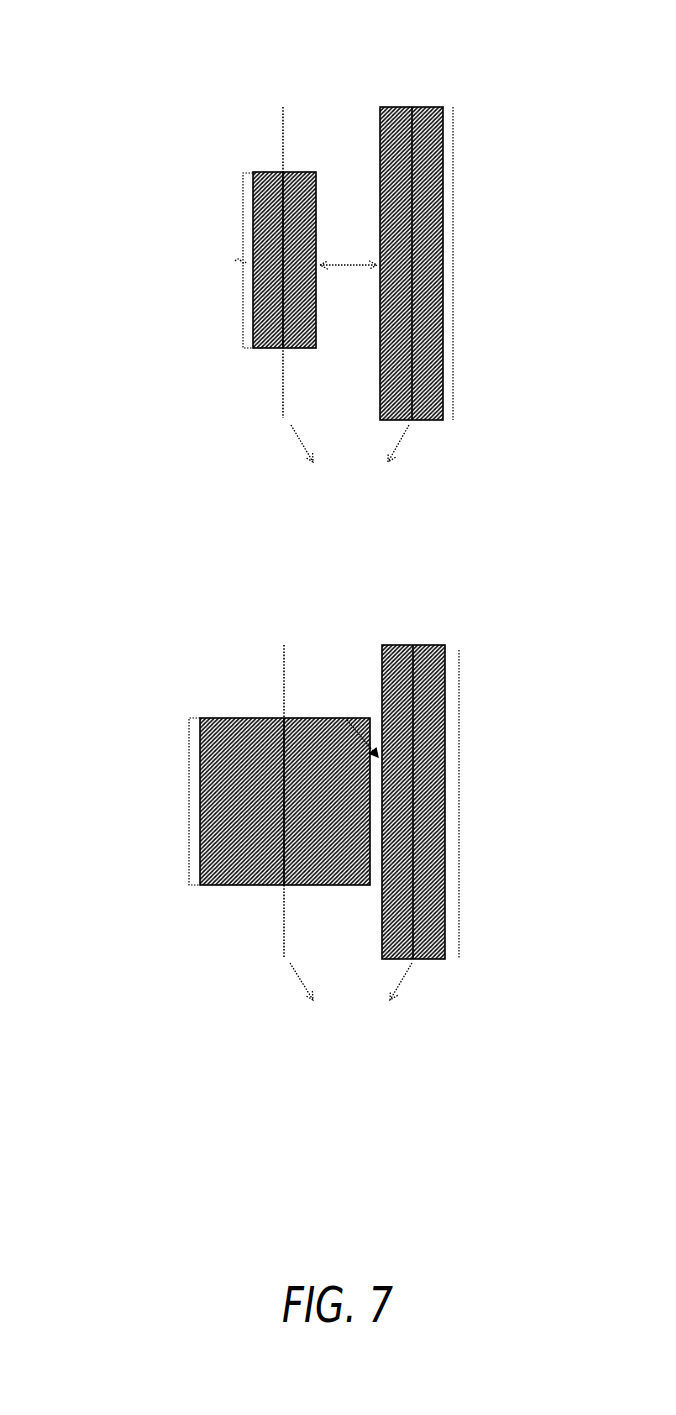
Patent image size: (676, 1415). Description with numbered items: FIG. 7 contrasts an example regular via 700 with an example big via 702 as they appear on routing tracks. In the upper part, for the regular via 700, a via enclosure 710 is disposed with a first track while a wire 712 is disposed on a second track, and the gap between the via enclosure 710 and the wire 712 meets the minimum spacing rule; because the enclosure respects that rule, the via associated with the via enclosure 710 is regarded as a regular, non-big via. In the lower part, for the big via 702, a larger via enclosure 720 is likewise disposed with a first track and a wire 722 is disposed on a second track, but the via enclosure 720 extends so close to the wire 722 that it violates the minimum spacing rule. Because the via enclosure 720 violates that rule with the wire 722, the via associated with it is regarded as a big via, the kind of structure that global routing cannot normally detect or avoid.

The regular via 700 is at (76, 92).
The big via 702 is at (76, 602).
The via enclosure 710 is at (250, 182).
The wire 712 is at (443, 160).
The via enclosure 720 is at (201, 732).
The wire 722 is at (445, 694).